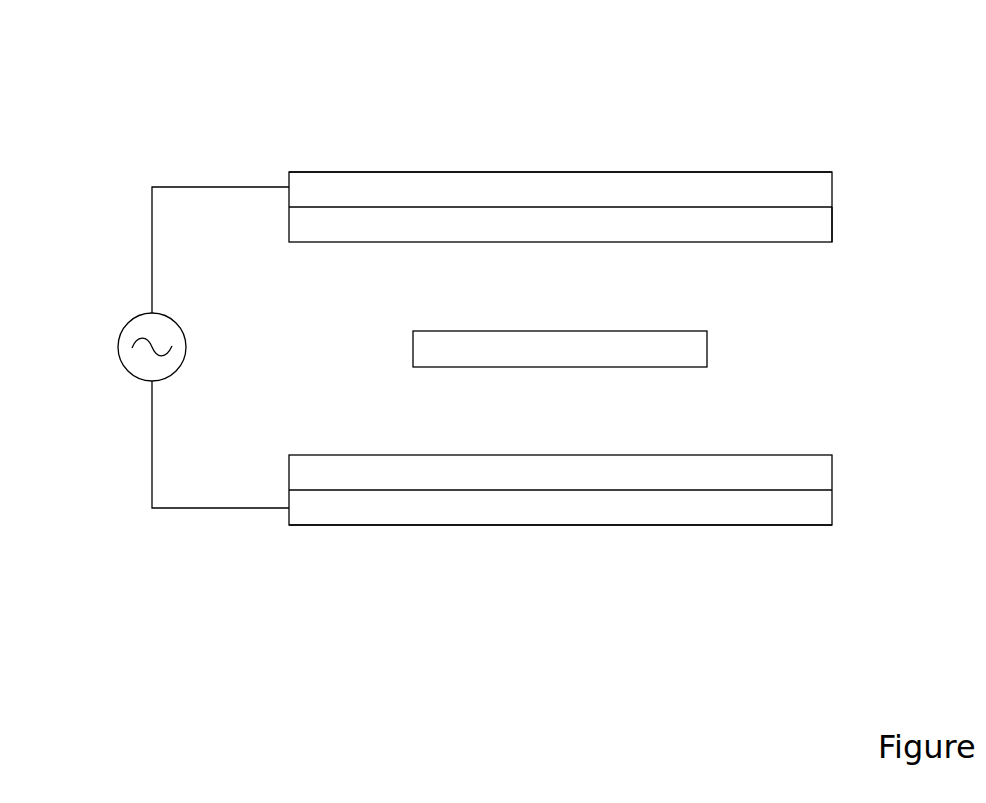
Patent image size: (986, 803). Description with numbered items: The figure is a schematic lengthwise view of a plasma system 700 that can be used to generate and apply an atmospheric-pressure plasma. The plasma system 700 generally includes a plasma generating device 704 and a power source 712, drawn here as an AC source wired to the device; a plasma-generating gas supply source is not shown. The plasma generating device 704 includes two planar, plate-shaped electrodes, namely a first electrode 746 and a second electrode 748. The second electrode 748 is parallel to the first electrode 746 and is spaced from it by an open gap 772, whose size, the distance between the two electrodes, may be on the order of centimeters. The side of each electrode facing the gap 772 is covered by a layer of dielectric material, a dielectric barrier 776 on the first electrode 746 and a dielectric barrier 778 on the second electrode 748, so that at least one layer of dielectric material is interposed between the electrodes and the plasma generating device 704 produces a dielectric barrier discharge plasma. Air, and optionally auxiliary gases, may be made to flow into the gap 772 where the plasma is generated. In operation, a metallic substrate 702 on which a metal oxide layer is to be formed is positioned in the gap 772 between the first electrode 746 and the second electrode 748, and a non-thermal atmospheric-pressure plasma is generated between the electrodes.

The plasma system 700 is at (132, 95).
The plasma generating device 704 is at (232, 167).
The second electrode 748 is at (803, 171).
The dielectric barrier 778 is at (833, 225).
The open gap 772 is at (780, 302).
The metallic substrate 702 is at (413, 350).
The power source 712 is at (117, 335).
The dielectric barrier 776 is at (833, 468).
The first electrode 746 is at (805, 526).